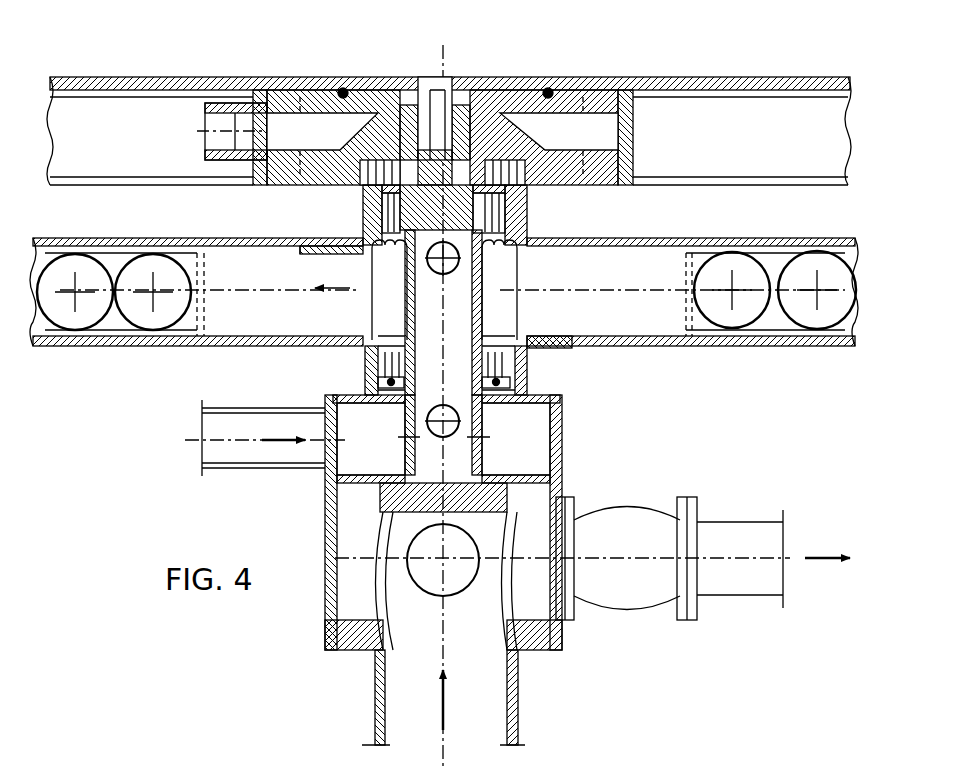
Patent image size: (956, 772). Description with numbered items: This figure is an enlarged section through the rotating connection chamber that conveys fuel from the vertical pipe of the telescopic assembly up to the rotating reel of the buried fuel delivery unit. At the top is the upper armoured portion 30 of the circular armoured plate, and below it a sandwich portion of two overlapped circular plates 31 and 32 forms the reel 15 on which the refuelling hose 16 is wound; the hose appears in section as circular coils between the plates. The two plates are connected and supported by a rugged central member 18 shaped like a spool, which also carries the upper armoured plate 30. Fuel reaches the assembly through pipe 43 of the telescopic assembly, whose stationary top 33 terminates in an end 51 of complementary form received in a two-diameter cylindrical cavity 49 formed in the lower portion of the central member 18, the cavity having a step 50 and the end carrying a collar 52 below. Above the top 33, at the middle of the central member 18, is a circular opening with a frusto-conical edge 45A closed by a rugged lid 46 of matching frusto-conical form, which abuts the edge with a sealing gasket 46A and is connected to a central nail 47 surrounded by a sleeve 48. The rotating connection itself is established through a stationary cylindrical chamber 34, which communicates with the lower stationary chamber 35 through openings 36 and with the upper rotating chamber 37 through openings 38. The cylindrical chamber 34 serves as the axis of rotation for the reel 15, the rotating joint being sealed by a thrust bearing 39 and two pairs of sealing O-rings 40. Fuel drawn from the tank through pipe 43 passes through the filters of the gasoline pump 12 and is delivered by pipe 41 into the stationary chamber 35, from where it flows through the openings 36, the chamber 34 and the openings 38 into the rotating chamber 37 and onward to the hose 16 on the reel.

The gasoline pump 12 is at (245, 72).
The reel 15 is at (716, 230).
The hose 16 is at (140, 312).
The central member 18 is at (318, 80).
The upper armoured portion 30 is at (127, 76).
The circular plate 31 is at (758, 238).
The circular plate 32 is at (755, 340).
The stationary top 33 is at (575, 492).
The stationary cylindrical chamber 34 is at (425, 355).
The lower stationary chamber 35 is at (540, 425).
The openings 36 is at (408, 446).
The upper rotating chamber 37 is at (500, 270).
The openings 38 is at (480, 291).
The thrust bearing 39 is at (500, 381).
The sealing O-rings 40 is at (483, 228).
The pipe 41 is at (265, 455).
The pipe 43 is at (498, 703).
The edge 45A is at (605, 80).
The lid 46 is at (525, 88).
The sealing gasket 46A is at (345, 88).
The central nail 47 is at (446, 104).
The sleeve 48 is at (488, 113).
The cylindrical cavity 49 is at (386, 113).
The step 50 is at (520, 197).
The end 51 is at (416, 118).
The collar 52 is at (300, 242).